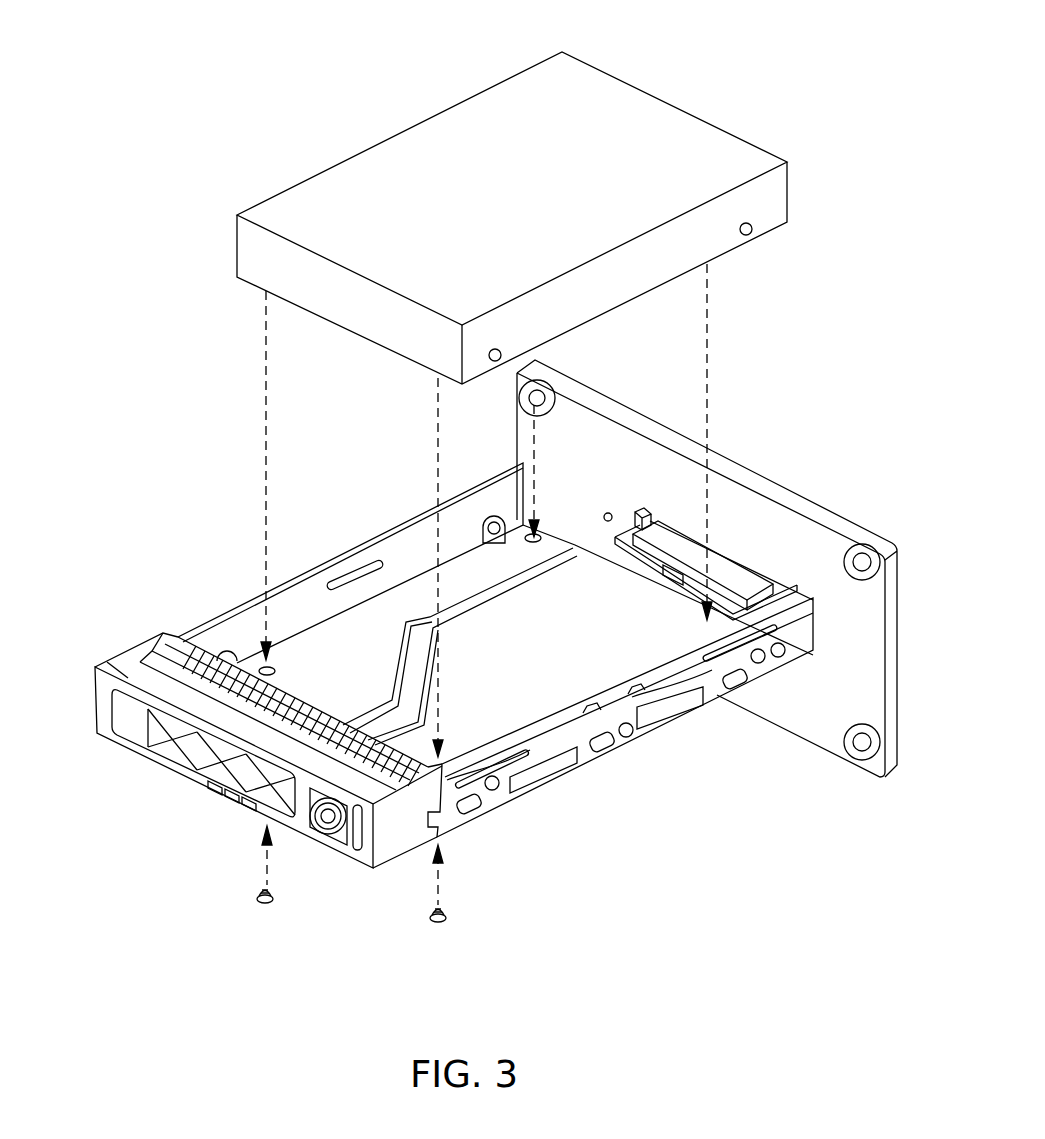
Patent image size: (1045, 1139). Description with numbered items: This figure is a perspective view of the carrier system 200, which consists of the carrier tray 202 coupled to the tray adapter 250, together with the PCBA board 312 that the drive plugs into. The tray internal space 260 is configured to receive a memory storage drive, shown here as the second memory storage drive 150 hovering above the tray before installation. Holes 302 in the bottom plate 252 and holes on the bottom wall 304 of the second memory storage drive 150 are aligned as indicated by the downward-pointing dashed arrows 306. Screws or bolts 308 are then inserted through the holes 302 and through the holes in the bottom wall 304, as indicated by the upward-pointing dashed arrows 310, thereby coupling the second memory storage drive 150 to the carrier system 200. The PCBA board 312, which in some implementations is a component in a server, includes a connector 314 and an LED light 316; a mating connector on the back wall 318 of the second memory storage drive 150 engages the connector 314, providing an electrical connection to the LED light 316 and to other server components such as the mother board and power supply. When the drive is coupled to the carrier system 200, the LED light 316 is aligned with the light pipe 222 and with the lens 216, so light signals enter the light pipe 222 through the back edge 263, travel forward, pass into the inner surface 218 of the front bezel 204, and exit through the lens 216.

The second memory storage drive 150 is at (508, 125).
The carrier system 200 is at (128, 631).
The carrier tray 202 is at (557, 737).
The front bezel 204 is at (125, 700).
The lens 216 is at (222, 797).
The inner surface 218 is at (331, 706).
The light pipe 222 is at (490, 540).
The tray adapter 250 is at (341, 536).
The bottom plate 252 is at (363, 555).
The tray internal space 260 is at (415, 568).
The back edge 263 is at (568, 524).
The holes 302 is at (270, 655).
The bottom wall 304 is at (733, 279).
The downward-pointing dashed arrows 306 is at (262, 461).
The screws or bolts 308 is at (266, 908).
The upward-pointing dashed arrows 310 is at (260, 858).
The PCBA board 312 is at (900, 692).
The connector 314 is at (742, 578).
The LED light 316 is at (607, 510).
The back wall 318 is at (702, 92).